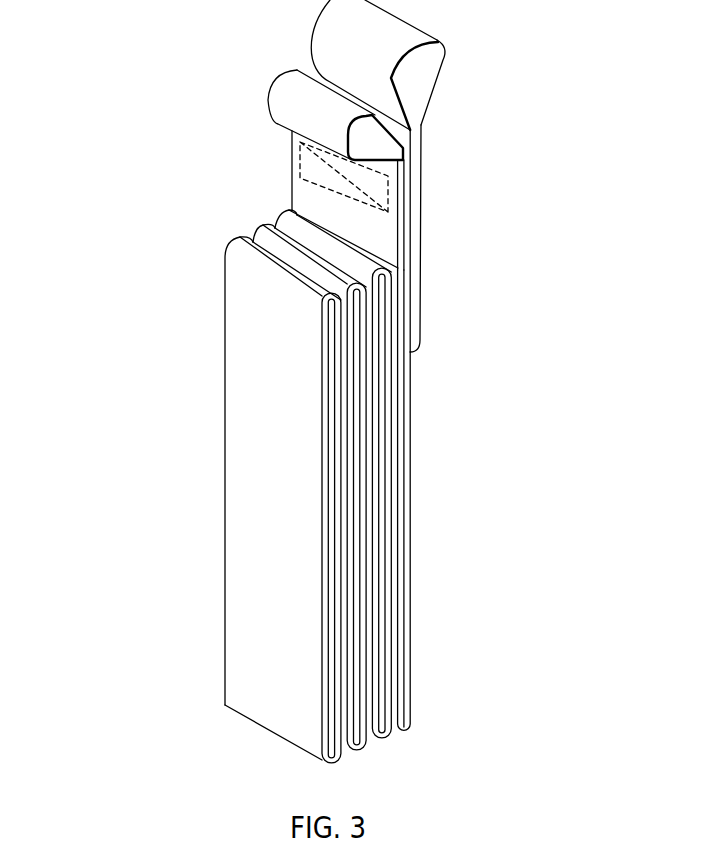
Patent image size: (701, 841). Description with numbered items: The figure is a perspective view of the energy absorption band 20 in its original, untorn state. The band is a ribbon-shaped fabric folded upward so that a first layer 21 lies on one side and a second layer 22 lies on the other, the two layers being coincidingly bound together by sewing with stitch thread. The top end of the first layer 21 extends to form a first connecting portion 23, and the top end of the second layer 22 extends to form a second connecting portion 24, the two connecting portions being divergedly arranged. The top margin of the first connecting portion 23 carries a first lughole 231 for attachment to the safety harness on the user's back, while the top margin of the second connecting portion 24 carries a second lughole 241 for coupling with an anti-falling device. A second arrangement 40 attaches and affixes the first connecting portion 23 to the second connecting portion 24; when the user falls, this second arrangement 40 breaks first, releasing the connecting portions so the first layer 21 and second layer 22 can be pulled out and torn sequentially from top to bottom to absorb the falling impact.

The energy absorption band 20 is at (153, 342).
The first layer 21 is at (413, 484).
The second layer 22 is at (265, 466).
The first connecting portion 23 is at (423, 290).
The first lughole 231 is at (417, 71).
The second connecting portion 24 is at (307, 195).
The second lughole 241 is at (373, 143).
The second arrangement 40 is at (305, 144).